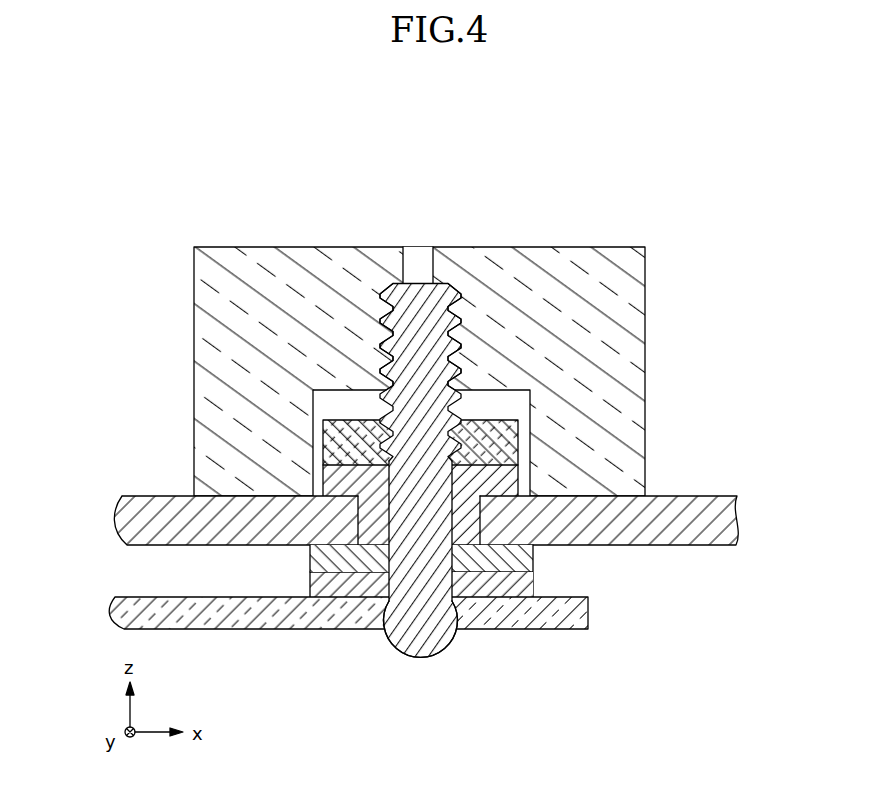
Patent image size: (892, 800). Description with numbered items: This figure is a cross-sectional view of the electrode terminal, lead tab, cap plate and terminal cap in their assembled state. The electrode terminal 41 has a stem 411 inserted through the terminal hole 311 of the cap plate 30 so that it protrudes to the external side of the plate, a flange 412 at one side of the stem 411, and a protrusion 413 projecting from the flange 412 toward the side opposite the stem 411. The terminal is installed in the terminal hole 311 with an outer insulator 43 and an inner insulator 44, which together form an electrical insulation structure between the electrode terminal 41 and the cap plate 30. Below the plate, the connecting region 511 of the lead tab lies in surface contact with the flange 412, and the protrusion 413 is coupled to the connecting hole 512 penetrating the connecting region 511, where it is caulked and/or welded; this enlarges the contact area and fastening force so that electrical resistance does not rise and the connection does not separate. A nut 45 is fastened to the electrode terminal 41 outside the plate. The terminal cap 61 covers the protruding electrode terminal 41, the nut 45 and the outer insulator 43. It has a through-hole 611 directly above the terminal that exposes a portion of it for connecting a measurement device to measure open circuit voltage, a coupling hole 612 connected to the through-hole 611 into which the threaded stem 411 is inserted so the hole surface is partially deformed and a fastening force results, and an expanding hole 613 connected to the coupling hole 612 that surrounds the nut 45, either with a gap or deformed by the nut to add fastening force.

The cap plate 30 is at (710, 534).
The terminal hole 311 is at (372, 497).
The electrode terminal 41 is at (461, 346).
The stem 411 is at (392, 337).
The flange 412 is at (517, 587).
The protrusion 413 is at (423, 613).
The outer insulator 43 is at (500, 478).
The inner insulator 44 is at (527, 555).
The nut 45 is at (333, 432).
The connecting region 511 is at (243, 616).
The connecting hole 512 is at (395, 642).
The terminal cap 61 is at (649, 250).
The through-hole 611 is at (417, 258).
The coupling hole 612 is at (443, 285).
The expanding hole 613 is at (527, 398).